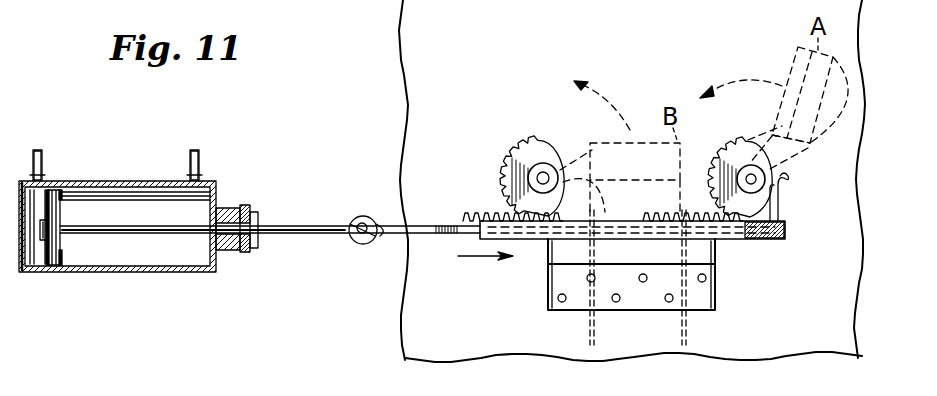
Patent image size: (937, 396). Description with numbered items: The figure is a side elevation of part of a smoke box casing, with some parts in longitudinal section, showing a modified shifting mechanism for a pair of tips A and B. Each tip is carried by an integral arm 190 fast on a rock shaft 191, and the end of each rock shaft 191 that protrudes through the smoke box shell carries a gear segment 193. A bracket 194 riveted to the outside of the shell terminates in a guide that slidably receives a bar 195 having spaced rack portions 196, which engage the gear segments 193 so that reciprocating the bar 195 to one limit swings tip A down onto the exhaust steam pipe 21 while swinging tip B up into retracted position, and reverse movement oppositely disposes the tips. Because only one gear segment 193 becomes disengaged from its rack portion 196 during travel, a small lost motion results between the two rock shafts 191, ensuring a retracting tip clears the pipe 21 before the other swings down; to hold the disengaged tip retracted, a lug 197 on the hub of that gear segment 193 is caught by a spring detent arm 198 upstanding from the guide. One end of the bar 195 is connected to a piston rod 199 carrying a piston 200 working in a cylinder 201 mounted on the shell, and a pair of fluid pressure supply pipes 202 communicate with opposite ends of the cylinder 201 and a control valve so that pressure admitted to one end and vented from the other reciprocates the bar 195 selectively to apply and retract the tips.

The exhaust steam pipe 21 is at (688, 343).
The integral arm 190 is at (792, 160).
The rock shaft 191 is at (546, 172).
The gear segment 193 is at (739, 150).
The bracket 194 is at (708, 287).
The bar 195 is at (445, 238).
The rack portions 196 is at (496, 212).
The lug 197 is at (782, 189).
The spring detent arm 198 is at (778, 214).
The piston rod 199 is at (323, 211).
The piston 200 is at (64, 272).
The cylinder 201 is at (184, 272).
The fluid pressure supply pipes 202 is at (192, 163).